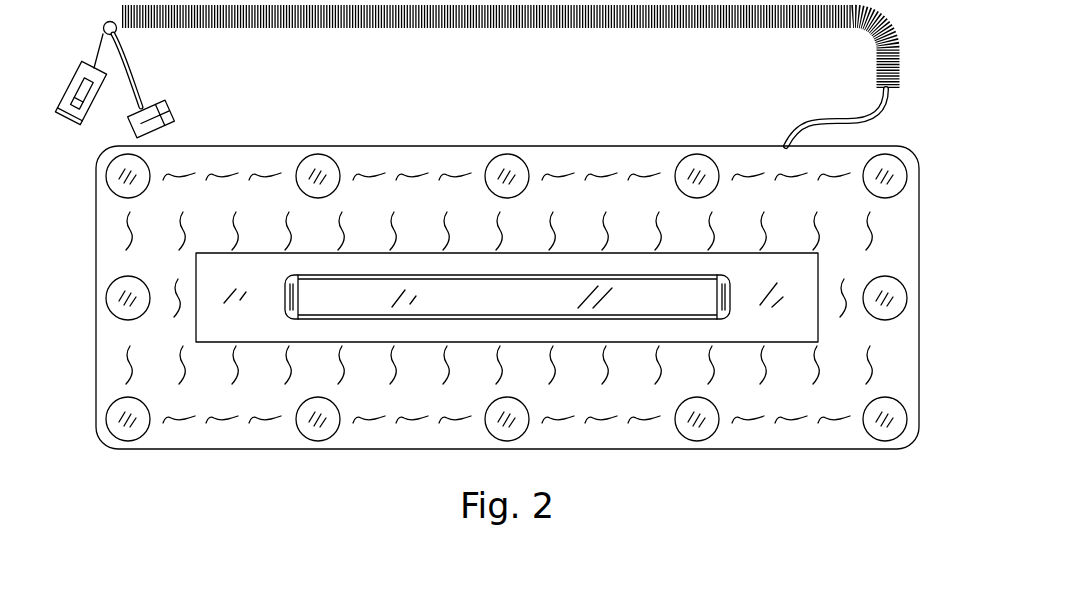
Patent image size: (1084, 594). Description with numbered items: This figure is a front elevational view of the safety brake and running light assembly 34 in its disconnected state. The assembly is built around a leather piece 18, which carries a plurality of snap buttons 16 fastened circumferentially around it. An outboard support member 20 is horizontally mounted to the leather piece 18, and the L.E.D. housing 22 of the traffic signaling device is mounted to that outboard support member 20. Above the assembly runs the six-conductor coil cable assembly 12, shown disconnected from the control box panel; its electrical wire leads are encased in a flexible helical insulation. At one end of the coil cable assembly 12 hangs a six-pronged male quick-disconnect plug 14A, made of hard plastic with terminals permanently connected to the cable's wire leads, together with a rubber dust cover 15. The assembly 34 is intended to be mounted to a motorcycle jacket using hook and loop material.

The six-conductor coil cable assembly 12 is at (523, 42).
The six-pronged male quick-disconnect plug 14A is at (93, 75).
The dust cover 15 is at (160, 118).
The snap buttons 16 is at (706, 168).
The leather piece 18 is at (402, 165).
The outboard support member 20 is at (753, 320).
The L.E.D. housing 22 is at (502, 297).
The safety brake and running light assembly 34 is at (507, 321).